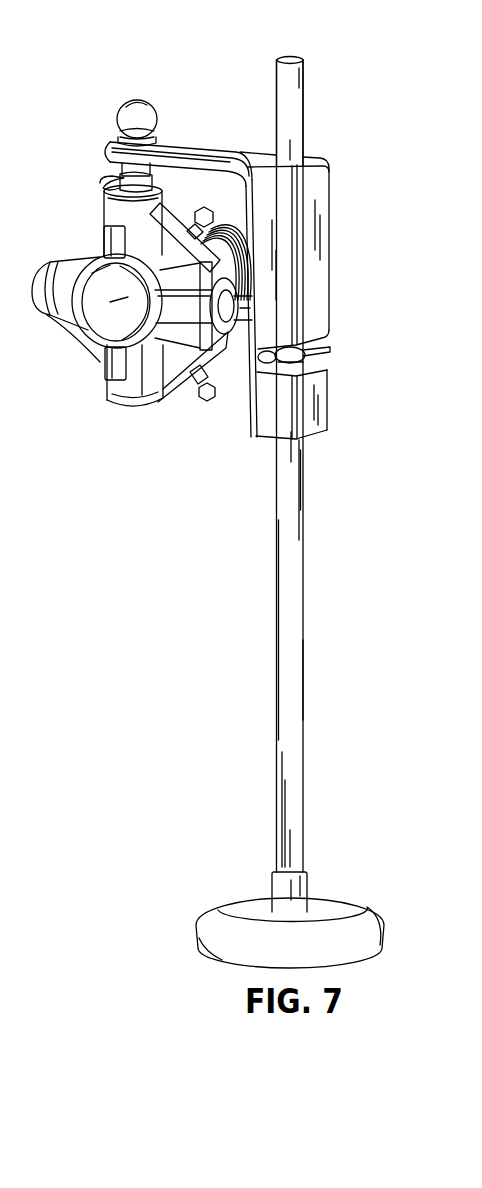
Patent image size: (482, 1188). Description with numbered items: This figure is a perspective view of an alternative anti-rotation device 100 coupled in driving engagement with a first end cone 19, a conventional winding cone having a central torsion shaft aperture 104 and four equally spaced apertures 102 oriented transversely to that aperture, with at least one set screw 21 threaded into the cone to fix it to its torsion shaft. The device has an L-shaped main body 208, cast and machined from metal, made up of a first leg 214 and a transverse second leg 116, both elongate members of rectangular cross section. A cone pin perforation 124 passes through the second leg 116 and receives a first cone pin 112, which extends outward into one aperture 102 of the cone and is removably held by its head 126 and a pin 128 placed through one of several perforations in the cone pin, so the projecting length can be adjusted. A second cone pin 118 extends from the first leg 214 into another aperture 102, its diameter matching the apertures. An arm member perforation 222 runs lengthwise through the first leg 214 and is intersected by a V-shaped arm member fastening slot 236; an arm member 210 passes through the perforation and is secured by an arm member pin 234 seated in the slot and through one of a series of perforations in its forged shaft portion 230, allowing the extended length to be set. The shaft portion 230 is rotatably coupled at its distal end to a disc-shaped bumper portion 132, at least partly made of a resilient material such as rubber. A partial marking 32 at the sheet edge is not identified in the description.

The anti-rotation device 100 is at (126, 241).
The first cone pin 112 is at (158, 92).
The head 126 is at (127, 115).
The cone pin perforation 124 is at (112, 139).
The second leg 116 is at (230, 152).
The pin 128 is at (101, 184).
The apertures 102 is at (157, 190).
The set screw 21 is at (214, 211).
The first end cone 19 is at (92, 236).
The torsion shaft aperture 104 is at (114, 317).
The second cone pin 118 is at (228, 322).
The arm member perforation 222 is at (297, 153).
The first leg 214 is at (320, 183).
The main body 208 is at (323, 295).
The arm member pin 234 is at (320, 353).
The arm member fastening slot 236 is at (325, 370).
The arm member 210 is at (322, 612).
The shaft portion 230 is at (300, 705).
The bumper portion 132 is at (198, 928).
The base 32 is at (10, 825).